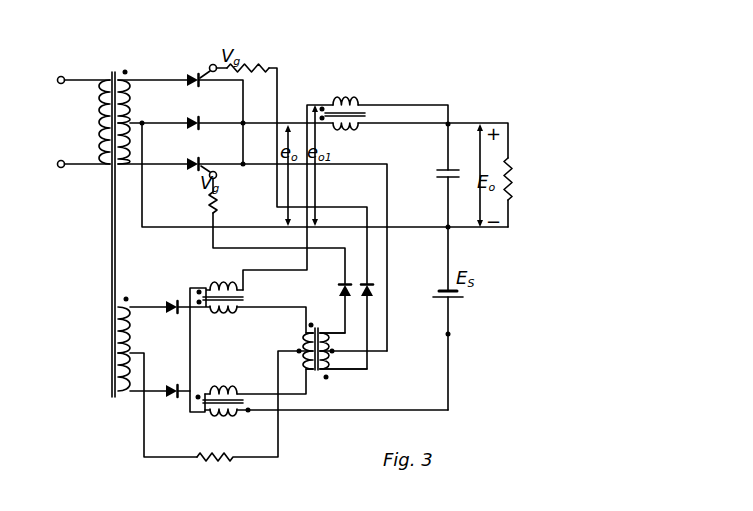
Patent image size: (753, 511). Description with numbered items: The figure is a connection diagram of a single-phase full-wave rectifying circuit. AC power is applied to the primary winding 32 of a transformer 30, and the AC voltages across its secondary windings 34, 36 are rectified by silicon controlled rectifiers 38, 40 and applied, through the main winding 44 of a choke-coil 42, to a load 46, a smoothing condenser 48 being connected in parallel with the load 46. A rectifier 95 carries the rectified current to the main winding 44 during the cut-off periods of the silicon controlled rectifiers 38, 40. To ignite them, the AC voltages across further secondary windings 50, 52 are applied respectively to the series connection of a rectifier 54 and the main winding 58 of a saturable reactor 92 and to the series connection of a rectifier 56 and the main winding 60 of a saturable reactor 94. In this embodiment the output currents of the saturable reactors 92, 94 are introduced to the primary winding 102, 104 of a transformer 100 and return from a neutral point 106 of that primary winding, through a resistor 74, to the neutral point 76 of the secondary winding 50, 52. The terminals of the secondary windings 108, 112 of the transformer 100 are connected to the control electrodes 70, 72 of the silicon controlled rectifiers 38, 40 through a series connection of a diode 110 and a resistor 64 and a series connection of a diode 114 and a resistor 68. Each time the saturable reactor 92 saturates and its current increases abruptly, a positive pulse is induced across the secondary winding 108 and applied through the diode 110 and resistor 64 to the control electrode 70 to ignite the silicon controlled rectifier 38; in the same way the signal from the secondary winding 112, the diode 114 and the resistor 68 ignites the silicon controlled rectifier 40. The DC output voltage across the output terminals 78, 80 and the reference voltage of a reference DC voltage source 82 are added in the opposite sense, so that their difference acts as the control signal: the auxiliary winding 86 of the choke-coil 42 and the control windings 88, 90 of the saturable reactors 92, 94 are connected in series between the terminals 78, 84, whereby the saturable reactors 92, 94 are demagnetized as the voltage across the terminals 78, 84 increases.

The transformer 30 is at (108, 249).
The primary winding 32 is at (95, 129).
The secondary winding 34 is at (128, 106).
The secondary winding 36 is at (138, 150).
The silicon controlled rectifier 38 is at (195, 73).
The silicon controlled rectifier 40 is at (197, 169).
The choke-coil 42 is at (372, 105).
The main winding of the choke-coil 44 is at (351, 133).
The load 46 is at (509, 176).
The smoothing condenser 48 is at (437, 172).
The secondary winding 50 is at (132, 334).
The secondary winding 52 is at (132, 395).
The rectifier 54 is at (168, 302).
The rectifier 56 is at (175, 399).
The main winding of saturable reactor 58 is at (218, 316).
The main winding of saturable reactor 60 is at (226, 384).
The resistor 64 is at (255, 66).
The resistor 68 is at (220, 208).
The control electrode 70 is at (217, 63).
The control electrode 72 is at (218, 177).
The resistor 74 is at (216, 463).
The neutral point of the secondary winding 76 is at (145, 360).
The output terminal 78 is at (450, 124).
The output terminal 80 is at (450, 229).
The reference DC voltage source 82 is at (463, 294).
The terminal 84 is at (450, 335).
The auxiliary winding of the choke-coil 86 is at (344, 96).
The control winding of saturable reactor 88 is at (217, 280).
The control winding of saturable reactor 90 is at (225, 412).
The saturable reactor 92 is at (293, 301).
The saturable reactor 94 is at (256, 409).
The rectifier 95 is at (194, 117).
The transformer 100 is at (316, 372).
The primary winding 102 is at (298, 344).
The primary winding 104 is at (305, 364).
The neutral point of the primary winding 106 is at (266, 346).
The secondary winding 108 is at (329, 363).
The diode 110 is at (373, 290).
The secondary winding 112 is at (327, 334).
The diode 114 is at (338, 293).